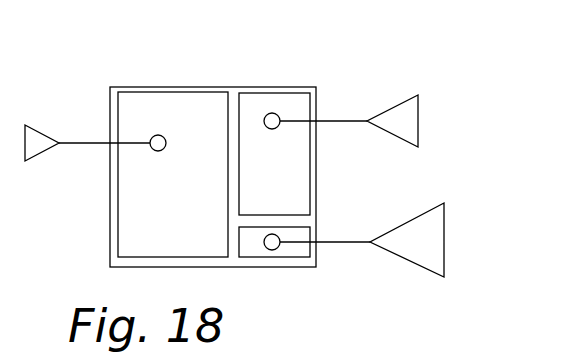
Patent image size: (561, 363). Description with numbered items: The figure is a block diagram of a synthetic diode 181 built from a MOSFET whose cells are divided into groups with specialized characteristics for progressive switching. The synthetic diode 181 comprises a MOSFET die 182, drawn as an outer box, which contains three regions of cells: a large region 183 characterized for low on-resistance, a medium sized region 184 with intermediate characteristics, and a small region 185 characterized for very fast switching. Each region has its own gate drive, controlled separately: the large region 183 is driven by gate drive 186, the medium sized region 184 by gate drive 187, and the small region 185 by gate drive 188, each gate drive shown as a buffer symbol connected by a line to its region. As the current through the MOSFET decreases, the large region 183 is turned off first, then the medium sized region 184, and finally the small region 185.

The synthetic diode 181 is at (210, 31).
The MOSFET die 182 is at (233, 83).
The large region 183 is at (153, 186).
The medium sized region 184 is at (293, 178).
The small region 185 is at (253, 248).
The gate drive 186 is at (18, 120).
The gate drive 187 is at (423, 117).
The gate drive 188 is at (398, 266).